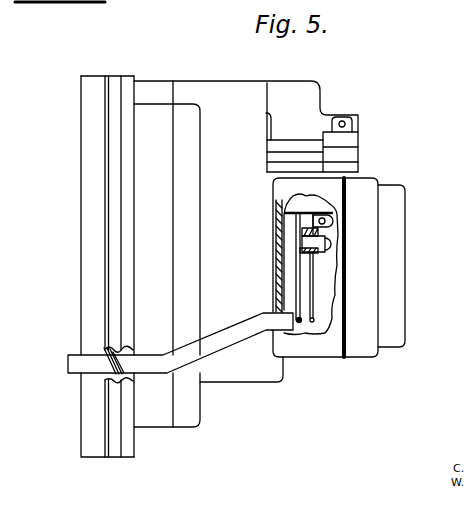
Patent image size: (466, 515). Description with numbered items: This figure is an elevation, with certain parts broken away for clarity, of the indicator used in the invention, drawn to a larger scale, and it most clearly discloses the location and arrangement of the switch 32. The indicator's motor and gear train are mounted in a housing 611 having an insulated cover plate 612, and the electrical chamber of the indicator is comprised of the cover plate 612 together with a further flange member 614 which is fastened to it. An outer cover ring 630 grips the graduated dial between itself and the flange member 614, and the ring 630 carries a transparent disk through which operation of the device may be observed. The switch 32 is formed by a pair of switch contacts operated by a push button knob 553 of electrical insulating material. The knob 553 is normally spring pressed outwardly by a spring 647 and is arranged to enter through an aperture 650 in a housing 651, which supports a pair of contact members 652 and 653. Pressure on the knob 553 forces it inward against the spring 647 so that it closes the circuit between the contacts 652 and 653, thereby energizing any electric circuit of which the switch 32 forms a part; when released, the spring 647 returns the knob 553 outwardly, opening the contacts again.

The switch 32 is at (291, 267).
The push button knob 553 is at (70, 362).
The housing 611 is at (222, 366).
The insulated cover plate 612 is at (160, 412).
The flange member 614 is at (78, 2).
The outer cover ring 630 is at (88, 427).
The spring 647 is at (123, 364).
The aperture 650 is at (266, 334).
The housing 651 is at (312, 348).
The contact member 652 is at (305, 280).
The contact member 653 is at (316, 292).